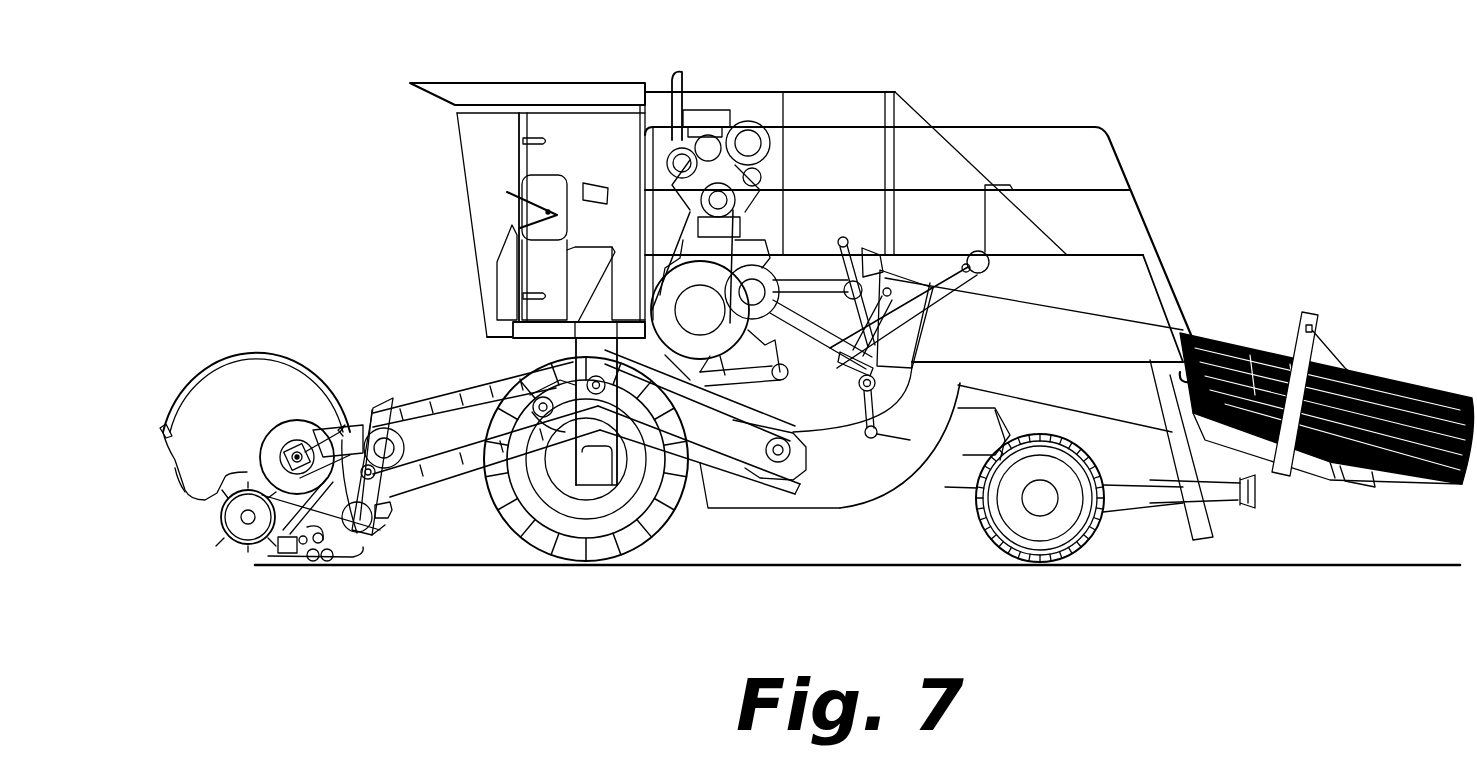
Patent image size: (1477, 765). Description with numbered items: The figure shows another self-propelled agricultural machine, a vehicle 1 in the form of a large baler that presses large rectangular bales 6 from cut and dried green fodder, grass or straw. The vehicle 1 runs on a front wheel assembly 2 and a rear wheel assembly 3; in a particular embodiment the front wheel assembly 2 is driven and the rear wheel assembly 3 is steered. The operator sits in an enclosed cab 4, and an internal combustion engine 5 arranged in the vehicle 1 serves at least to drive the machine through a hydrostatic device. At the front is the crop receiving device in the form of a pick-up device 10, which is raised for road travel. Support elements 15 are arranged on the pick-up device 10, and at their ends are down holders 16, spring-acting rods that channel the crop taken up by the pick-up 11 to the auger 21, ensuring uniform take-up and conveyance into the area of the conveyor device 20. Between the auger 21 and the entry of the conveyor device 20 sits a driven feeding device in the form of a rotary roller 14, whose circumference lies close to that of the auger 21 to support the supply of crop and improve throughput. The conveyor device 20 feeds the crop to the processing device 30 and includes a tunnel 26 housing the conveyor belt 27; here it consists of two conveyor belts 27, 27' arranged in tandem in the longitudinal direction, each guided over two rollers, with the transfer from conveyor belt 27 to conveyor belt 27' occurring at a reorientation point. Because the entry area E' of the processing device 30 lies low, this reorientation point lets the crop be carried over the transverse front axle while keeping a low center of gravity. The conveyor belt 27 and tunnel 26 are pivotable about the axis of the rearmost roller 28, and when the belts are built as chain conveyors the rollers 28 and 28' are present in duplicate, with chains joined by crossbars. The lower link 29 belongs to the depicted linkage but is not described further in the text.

The vehicle 1 is at (1192, 127).
The front wheel assembly 2 is at (640, 545).
The rear wheel assembly 3 is at (1100, 528).
The cab 4 is at (548, 83).
The internal combustion engine 5 is at (728, 140).
The large rectangular bales 6 is at (1432, 386).
The pick-up device 10 is at (364, 332).
The pick-up 11 is at (217, 528).
The roller 14 is at (385, 525).
The support elements 15 is at (248, 353).
The down holders 16 is at (168, 476).
The conveyor device 20 is at (428, 357).
The auger 21 is at (270, 432).
The tunnel 26 is at (416, 406).
The conveyor belt 27 is at (486, 430).
The conveyor belt 27' is at (721, 415).
The roller 28 is at (483, 401).
The roller 28' is at (681, 410).
The lower link arm 29 is at (706, 472).
The processing device 30 is at (822, 522).
The entry area E' is at (900, 445).